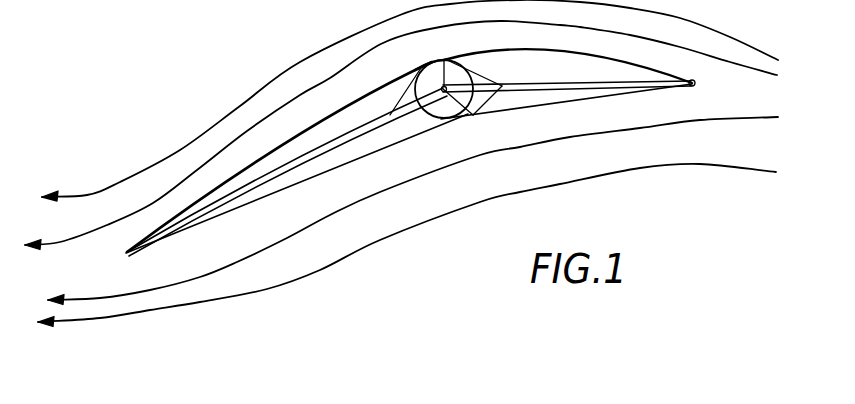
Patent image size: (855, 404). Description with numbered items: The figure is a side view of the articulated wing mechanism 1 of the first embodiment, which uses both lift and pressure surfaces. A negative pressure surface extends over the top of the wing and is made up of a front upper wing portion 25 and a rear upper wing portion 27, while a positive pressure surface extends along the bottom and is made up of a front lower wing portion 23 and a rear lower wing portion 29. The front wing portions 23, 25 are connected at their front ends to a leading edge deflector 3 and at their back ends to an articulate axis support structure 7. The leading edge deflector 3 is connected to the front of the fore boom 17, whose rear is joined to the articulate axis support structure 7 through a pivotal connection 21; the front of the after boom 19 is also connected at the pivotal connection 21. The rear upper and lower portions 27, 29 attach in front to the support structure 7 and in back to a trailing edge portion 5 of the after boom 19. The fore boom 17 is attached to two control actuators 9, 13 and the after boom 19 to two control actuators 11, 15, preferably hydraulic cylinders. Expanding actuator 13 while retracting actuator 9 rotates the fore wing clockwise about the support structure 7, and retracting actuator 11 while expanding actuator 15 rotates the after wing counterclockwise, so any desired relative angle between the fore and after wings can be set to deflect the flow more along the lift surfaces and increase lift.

The articulated wing mechanism 1 is at (297, 50).
The leading edge deflector 3 is at (698, 82).
The trailing edge portion 5 is at (127, 256).
The articulate axis support structure 7 is at (452, 103).
The control actuator 9 is at (498, 103).
The control actuator 11 is at (395, 138).
The control actuator 13 is at (492, 78).
The control actuator 15 is at (402, 92).
The fore boom 17 is at (580, 92).
The after boom 19 is at (309, 160).
The pivotal connection 21 is at (440, 56).
The front lower wing portion 23 is at (633, 95).
The upper wing portion 25 is at (563, 48).
The rear upper wing portion 27 is at (277, 147).
The lower wing portion 29 is at (201, 223).